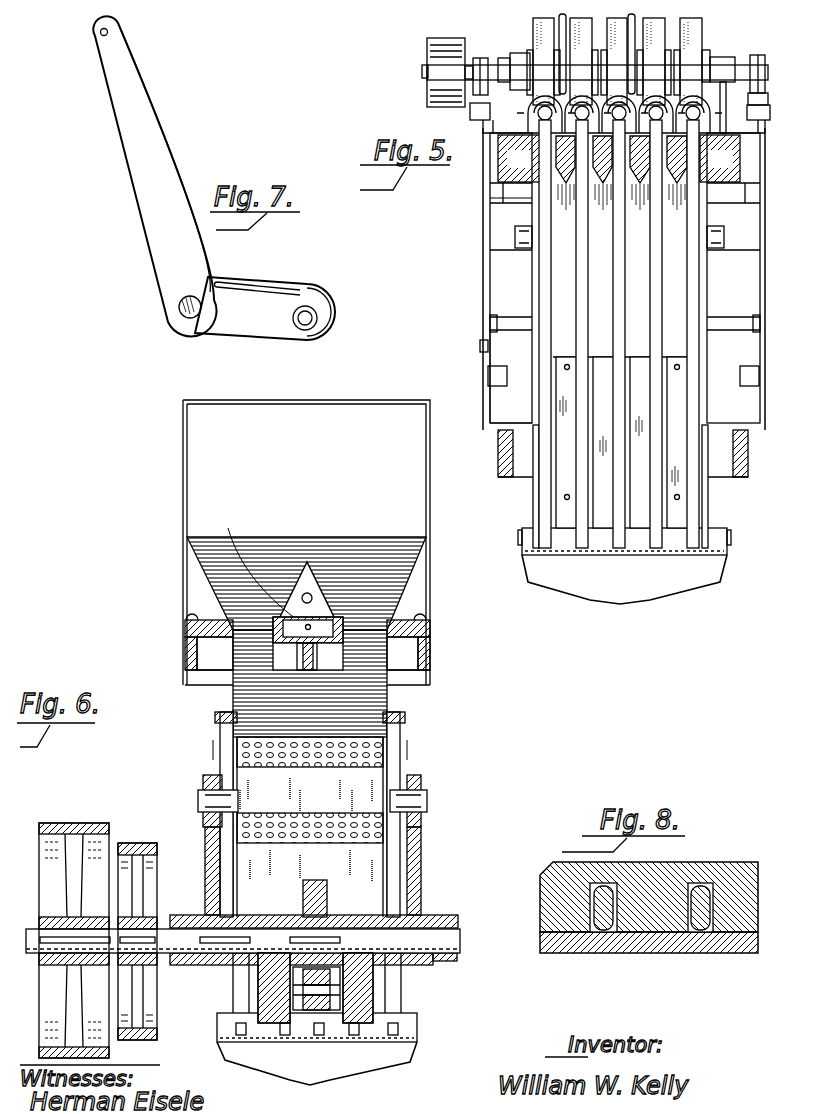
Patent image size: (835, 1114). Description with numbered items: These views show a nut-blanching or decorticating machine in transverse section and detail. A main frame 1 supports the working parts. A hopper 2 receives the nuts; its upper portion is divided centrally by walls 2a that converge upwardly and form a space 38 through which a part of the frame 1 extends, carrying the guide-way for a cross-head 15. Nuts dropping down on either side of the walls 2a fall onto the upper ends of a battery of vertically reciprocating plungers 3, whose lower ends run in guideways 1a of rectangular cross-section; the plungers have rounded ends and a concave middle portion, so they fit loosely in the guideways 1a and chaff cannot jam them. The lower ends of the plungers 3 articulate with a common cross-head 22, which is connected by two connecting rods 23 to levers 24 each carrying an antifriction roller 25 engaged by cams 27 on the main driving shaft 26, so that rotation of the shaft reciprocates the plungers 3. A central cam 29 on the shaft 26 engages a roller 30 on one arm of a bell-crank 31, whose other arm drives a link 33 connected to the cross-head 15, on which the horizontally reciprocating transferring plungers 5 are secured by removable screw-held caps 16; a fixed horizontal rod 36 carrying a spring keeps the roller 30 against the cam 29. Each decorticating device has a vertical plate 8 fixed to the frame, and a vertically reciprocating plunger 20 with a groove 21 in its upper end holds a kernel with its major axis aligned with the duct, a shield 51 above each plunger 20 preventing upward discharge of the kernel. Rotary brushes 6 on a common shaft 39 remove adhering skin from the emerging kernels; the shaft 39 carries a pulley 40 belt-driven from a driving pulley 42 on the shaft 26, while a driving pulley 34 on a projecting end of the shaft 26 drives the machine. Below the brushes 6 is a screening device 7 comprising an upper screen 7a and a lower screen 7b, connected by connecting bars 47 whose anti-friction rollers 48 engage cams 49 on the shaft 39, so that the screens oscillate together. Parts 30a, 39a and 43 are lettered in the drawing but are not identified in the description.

In FIG. 5, the main frame 1 is at (500, 153).
In FIG. 6, the main frame 1 is at (432, 642).
In FIG. 5, the guideways 1a is at (578, 407).
In FIG. 8, the guideways 1a is at (587, 897).
In FIG. 6, the hopper 2 is at (306, 542).
In FIG. 6, the walls 2a is at (292, 600).
In FIG. 5, the vertically reciprocating plungers 3 is at (577, 280).
In FIG. 6, the vertically reciprocating plungers 3 is at (247, 1035).
In FIG. 8, the vertically reciprocating plungers 3 is at (590, 910).
In FIG. 6, the transferring plungers 5 is at (312, 565).
In FIG. 5, the rotary brushes 6 is at (535, 30).
In FIG. 5, the screening device 7 is at (625, 278).
In FIG. 5, the upper screen 7a is at (495, 214).
In FIG. 5, the lower screen 7b is at (488, 362).
In FIG. 5, the vertical plate 8 is at (537, 115).
In FIG. 6, the cross-head 15 is at (357, 627).
In FIG. 6, the screw-held caps 16 is at (303, 596).
In FIG. 5, the vertically reciprocating plunger 20 is at (618, 214).
In FIG. 5, the groove 21 is at (619, 158).
In FIG. 5, the cross-head 22 is at (624, 566).
In FIG. 6, the cross-head 22 is at (317, 1049).
In FIG. 5, the connecting rods 23 is at (535, 500).
In FIG. 6, the connecting rods 23 is at (226, 742).
In FIG. 5, the levers 24 is at (722, 260).
In FIG. 6, the levers 24 is at (213, 772).
In FIG. 6, the antifriction roller 25 is at (206, 816).
In FIG. 6, the main driving shaft 26 is at (462, 931).
In FIG. 6, the cams 27 is at (206, 874).
In FIG. 6, the cam 29 is at (328, 894).
In FIG. 6, the antifriction roller 30 is at (310, 1011).
In FIG. 6, the cross head arm 30a is at (268, 1024).
In FIG. 7, the bell-crank 31 is at (214, 178).
In FIG. 6, the bell-crank 31 is at (333, 1012).
In FIG. 6, the link 33 is at (315, 672).
In FIG. 6, the driving pulley 34 is at (52, 823).
In FIG. 6, the fixed horizontal rod 36 is at (256, 566).
In FIG. 6, the space 38 is at (318, 618).
In FIG. 5, the shaft 39 is at (420, 72).
In FIG. 6, the lever arm 39a is at (365, 1024).
In FIG. 5, the pulley 40 is at (430, 48).
In FIG. 6, the driving pulley 42 is at (134, 843).
In FIG. 5, the bearings 43 is at (510, 62).
In FIG. 5, the connecting bars 47 is at (482, 291).
In FIG. 5, the anti-friction roller 48 is at (470, 112).
In FIG. 5, the cams 49 is at (474, 58).
In FIG. 5, the shields 51 is at (597, 47).